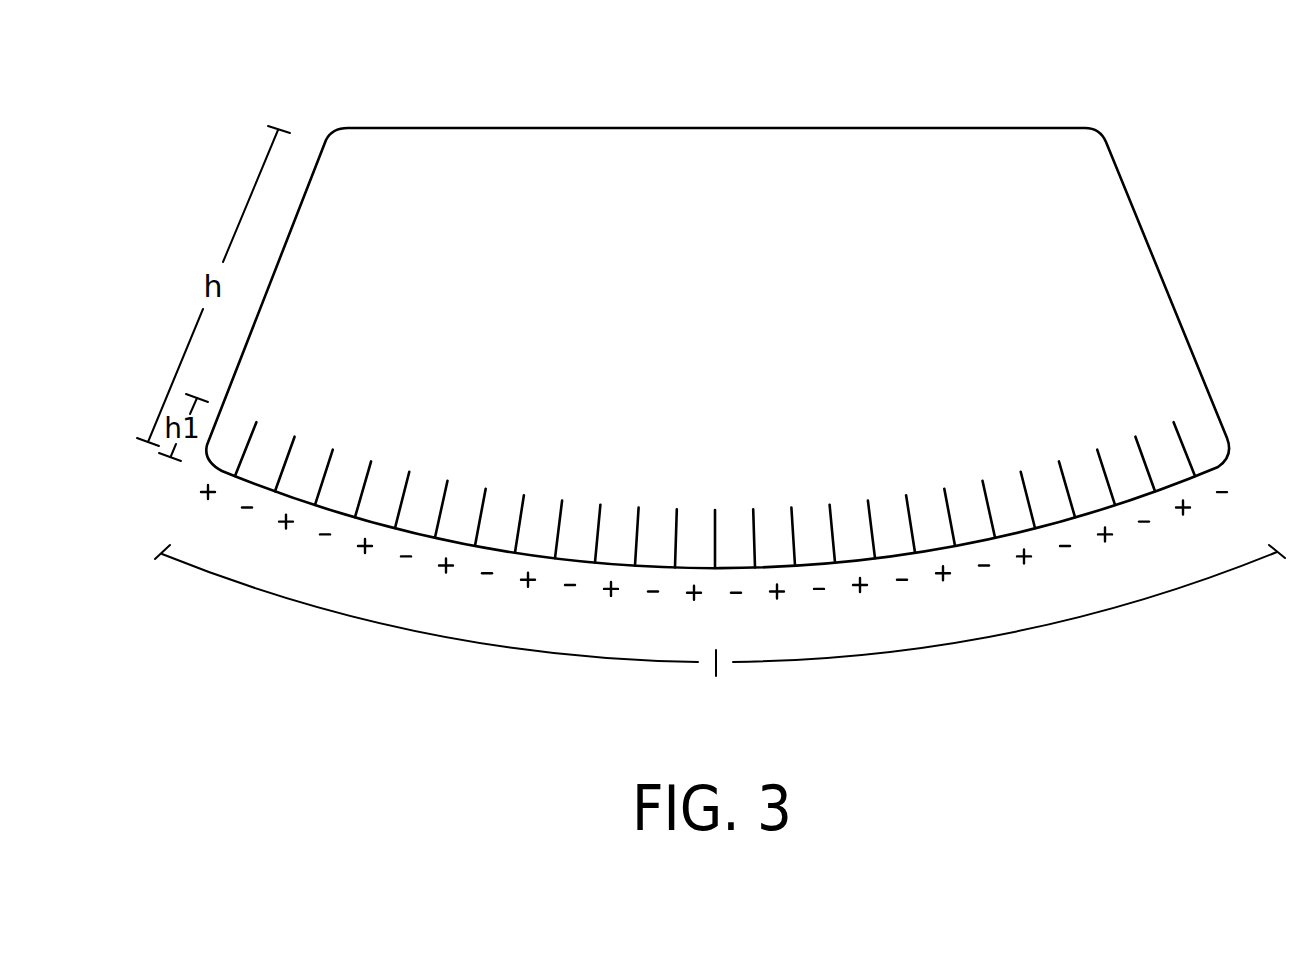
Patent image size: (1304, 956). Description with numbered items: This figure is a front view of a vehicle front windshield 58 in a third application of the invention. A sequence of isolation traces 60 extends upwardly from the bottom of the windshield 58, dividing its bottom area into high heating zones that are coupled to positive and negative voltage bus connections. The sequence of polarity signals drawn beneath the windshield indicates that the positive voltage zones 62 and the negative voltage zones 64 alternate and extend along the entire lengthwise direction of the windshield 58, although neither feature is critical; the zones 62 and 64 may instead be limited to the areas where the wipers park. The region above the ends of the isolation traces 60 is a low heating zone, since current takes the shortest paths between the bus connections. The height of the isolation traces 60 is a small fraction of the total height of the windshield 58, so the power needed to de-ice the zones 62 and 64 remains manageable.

The front windshield 58 is at (996, 70).
The isolation traces 60 is at (1143, 450).
The positive voltage zones 62 is at (540, 512).
The negative voltage zones 64 is at (655, 513).